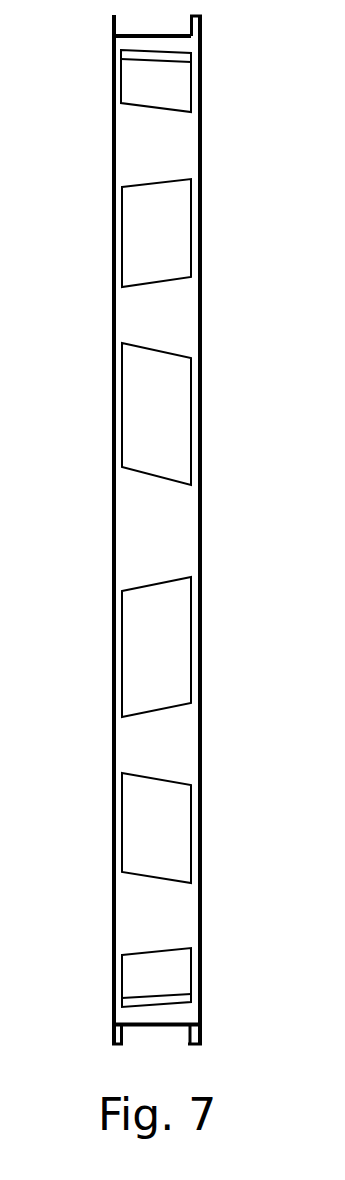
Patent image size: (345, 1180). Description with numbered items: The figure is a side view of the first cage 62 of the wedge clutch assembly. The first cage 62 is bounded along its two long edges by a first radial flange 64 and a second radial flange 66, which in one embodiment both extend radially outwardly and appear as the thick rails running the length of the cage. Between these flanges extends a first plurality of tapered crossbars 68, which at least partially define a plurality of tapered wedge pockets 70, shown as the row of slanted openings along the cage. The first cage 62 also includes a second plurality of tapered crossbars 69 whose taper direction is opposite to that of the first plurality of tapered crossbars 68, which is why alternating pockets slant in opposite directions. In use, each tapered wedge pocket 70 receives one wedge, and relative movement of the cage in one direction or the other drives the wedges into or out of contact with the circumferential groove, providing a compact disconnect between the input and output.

The first cage 62 is at (190, 148).
The first radial flange 64 is at (200, 212).
The second radial flange 66 is at (112, 232).
The first plurality of tapered crossbars 68 is at (190, 330).
The second plurality of tapered crossbars 69 is at (180, 533).
The tapered wedge pockets 70 is at (175, 278).